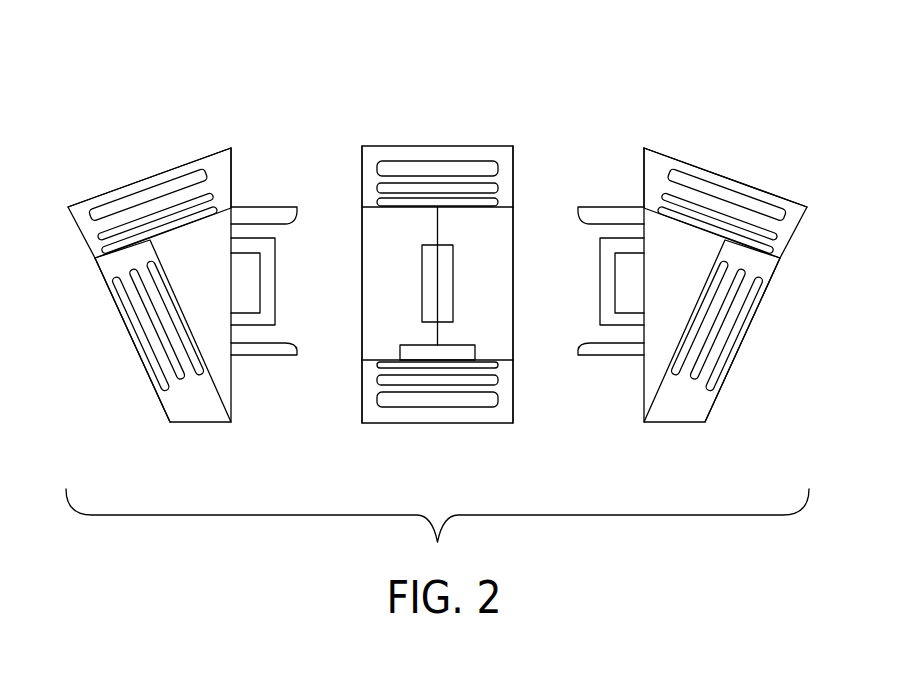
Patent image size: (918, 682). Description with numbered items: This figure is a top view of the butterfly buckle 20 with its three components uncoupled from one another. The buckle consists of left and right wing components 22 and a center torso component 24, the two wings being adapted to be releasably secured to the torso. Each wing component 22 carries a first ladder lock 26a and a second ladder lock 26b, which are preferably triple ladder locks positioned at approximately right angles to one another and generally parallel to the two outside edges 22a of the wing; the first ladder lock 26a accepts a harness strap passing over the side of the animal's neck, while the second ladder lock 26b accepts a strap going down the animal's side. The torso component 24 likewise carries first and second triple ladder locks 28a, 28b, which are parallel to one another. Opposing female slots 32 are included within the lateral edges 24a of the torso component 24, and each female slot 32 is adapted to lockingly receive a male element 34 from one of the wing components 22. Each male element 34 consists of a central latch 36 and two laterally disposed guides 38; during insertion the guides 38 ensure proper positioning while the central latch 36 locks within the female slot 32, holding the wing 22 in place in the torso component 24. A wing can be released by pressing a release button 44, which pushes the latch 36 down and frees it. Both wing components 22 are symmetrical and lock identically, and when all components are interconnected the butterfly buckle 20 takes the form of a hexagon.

The butterfly buckle 20 is at (590, 94).
The wing component 22 is at (215, 160).
The outside edge 22a is at (140, 180).
The center torso component 24 is at (420, 146).
The lateral edge 24a is at (362, 163).
The first ladder lock 26a is at (102, 215).
The second ladder lock 26b is at (147, 343).
The first triple ladder lock 28a is at (457, 168).
The second triple ladder lock 28b is at (449, 414).
The female slot 32 is at (362, 352).
The male element 34 is at (252, 378).
The central latch 36 is at (267, 280).
The guide 38 is at (247, 213).
The release button 44 is at (445, 258).